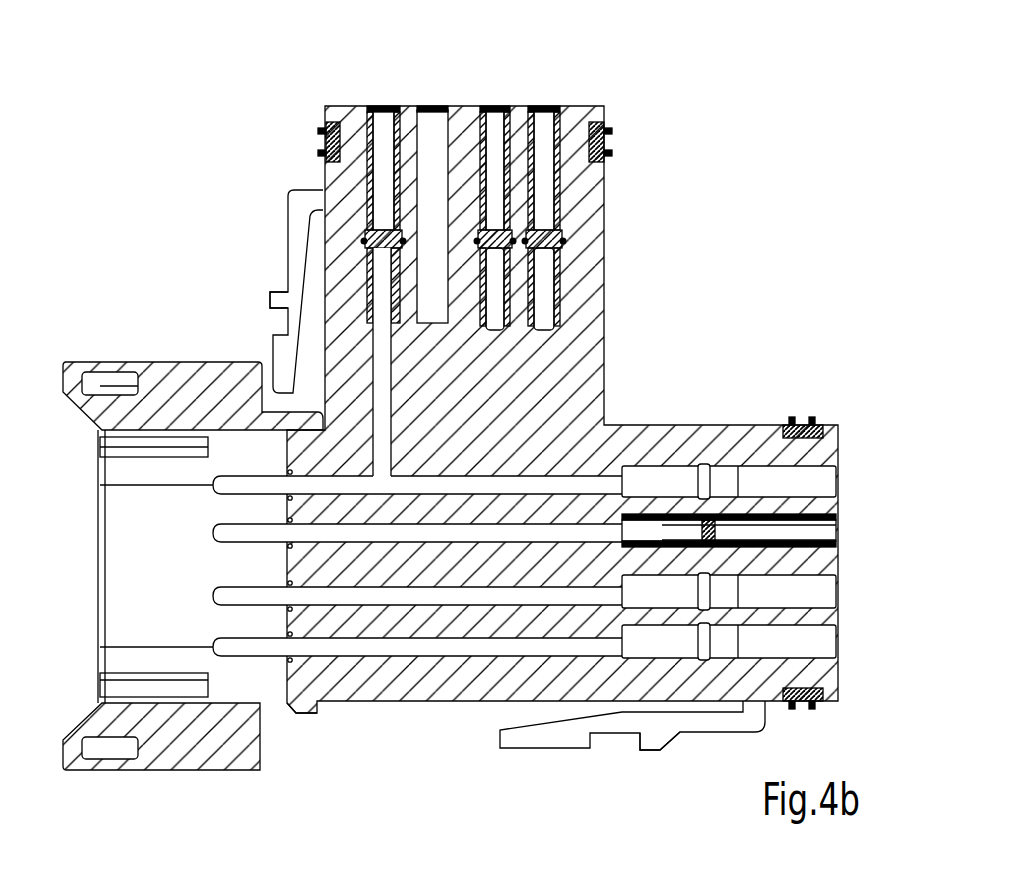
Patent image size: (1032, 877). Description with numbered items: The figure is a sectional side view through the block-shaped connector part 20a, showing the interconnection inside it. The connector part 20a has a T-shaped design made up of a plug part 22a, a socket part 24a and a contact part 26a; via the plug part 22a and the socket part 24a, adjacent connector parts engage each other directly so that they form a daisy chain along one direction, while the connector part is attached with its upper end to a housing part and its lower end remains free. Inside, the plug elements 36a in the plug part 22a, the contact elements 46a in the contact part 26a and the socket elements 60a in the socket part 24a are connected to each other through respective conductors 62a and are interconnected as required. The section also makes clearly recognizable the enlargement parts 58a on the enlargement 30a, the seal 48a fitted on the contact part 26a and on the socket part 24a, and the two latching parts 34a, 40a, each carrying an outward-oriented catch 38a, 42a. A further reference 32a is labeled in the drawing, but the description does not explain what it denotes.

The connector part 20a is at (620, 86).
The plug part 22a is at (300, 432).
The socket part 24a is at (703, 447).
The contact part 26a is at (567, 288).
The enlargement 30a is at (274, 708).
The housing base 32a is at (320, 871).
The latching part 34a is at (568, 737).
The plug elements 36a is at (213, 647).
The catch 38a is at (658, 748).
The latching part 40a is at (295, 230).
The catch 42a is at (277, 295).
The contact elements 46a is at (383, 106).
The seal 48a is at (608, 152).
The enlargement parts 58a is at (157, 375).
The socket elements 60a is at (838, 480).
The conductors 62a is at (388, 400).